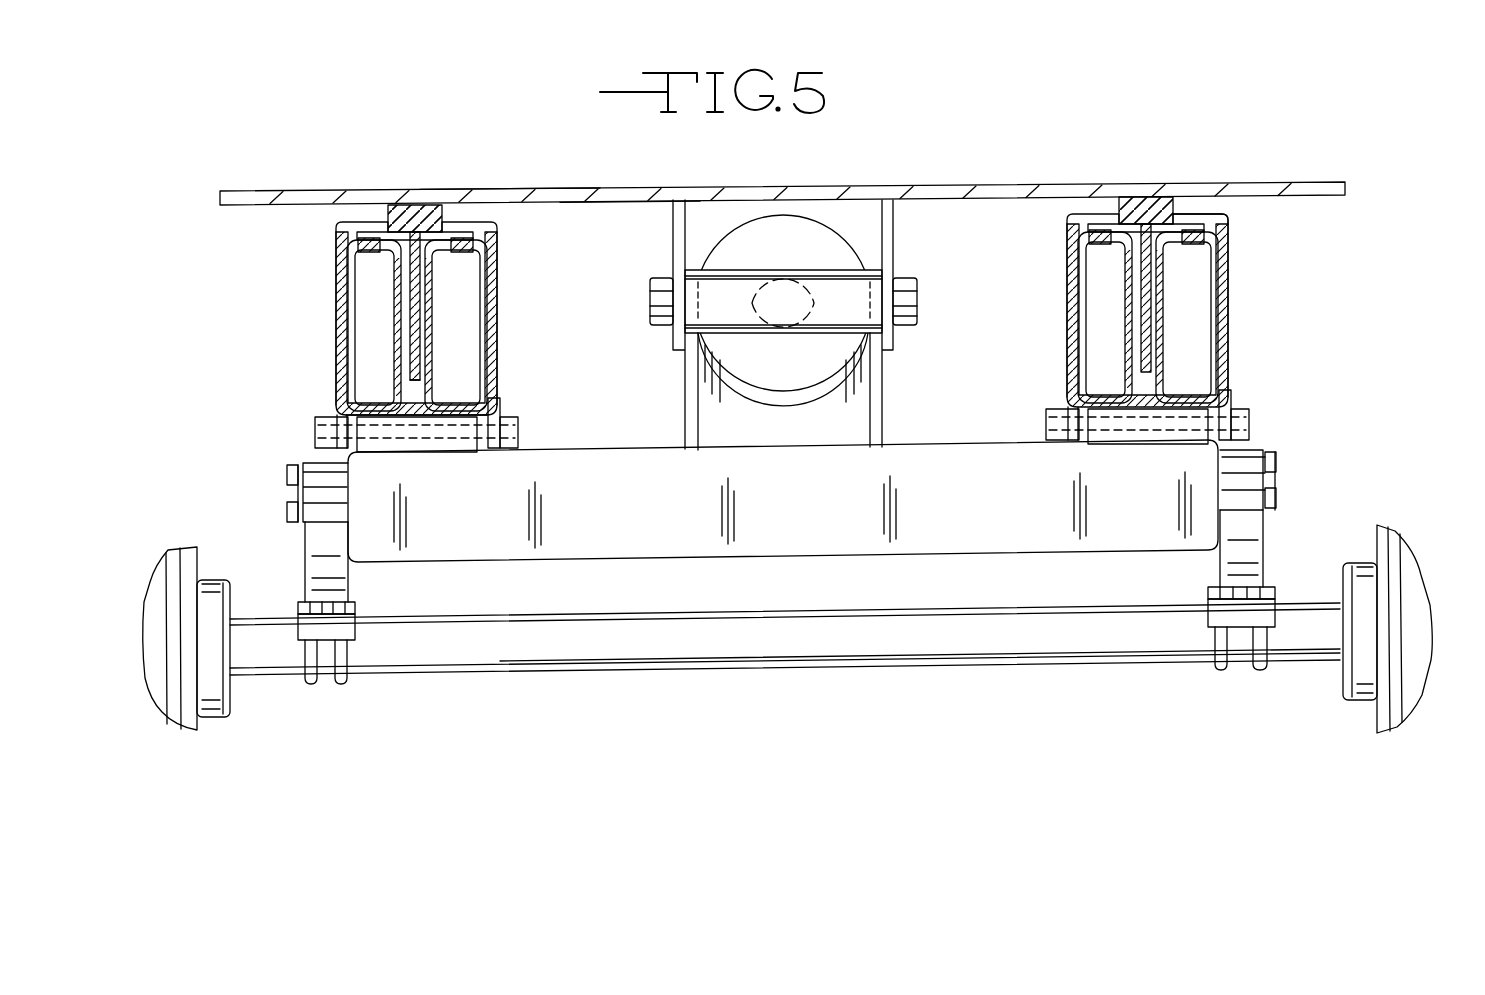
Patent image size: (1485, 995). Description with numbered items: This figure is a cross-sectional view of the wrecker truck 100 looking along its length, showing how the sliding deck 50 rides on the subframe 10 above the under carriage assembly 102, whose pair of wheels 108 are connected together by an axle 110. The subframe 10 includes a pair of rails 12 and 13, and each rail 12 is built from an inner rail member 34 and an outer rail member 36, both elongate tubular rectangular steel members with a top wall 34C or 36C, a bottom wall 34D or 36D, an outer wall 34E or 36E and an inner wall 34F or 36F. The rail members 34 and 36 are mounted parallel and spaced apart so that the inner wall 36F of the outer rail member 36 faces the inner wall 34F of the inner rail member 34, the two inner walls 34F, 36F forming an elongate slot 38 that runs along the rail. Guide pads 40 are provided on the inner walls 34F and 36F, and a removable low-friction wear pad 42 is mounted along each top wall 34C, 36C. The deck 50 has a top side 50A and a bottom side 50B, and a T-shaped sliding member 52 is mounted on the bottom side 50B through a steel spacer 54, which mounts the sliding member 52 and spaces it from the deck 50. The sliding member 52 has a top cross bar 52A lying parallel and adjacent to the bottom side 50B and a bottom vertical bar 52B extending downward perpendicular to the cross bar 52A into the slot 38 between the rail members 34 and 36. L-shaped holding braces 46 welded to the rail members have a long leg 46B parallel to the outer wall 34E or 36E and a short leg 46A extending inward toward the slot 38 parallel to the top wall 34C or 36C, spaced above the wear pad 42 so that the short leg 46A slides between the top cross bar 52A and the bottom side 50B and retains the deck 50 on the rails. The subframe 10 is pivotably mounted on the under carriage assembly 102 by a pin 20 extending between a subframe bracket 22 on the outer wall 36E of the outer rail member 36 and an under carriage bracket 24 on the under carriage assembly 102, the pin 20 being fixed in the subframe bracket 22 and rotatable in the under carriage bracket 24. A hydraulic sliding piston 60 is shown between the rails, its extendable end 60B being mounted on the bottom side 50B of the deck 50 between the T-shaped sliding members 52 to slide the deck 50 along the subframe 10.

The wrecker truck 100 is at (968, 98).
The sliding deck 50 is at (333, 190).
The top side of deck 50A is at (474, 177).
The bottom side of deck 50B is at (619, 210).
The spacer 54 is at (406, 205).
The T-shaped sliding member 52 is at (410, 350).
The top cross bar 52A is at (463, 235).
The bottom vertical bar 52B is at (428, 365).
The rail 12 is at (338, 387).
The outer rail member 36 is at (1223, 305).
The top wall of outer rail member 36C is at (368, 245).
The bottom wall of outer rail member 36D is at (340, 400).
The outer wall of outer rail member 36E is at (334, 321).
The inner wall of outer rail member 36F is at (395, 276).
The inner rail member 34 is at (1073, 310).
The top wall of inner rail member 34C is at (470, 245).
The bottom wall of inner rail member 34D is at (493, 387).
The outer wall of inner rail member 34E is at (500, 318).
The inner wall of inner rail member 34F is at (445, 277).
The L-shaped holding brace 46 is at (1073, 350).
The short leg of holding brace 46A is at (1095, 215).
The long leg of holding brace 46B is at (1070, 382).
The guide pad 40 is at (1130, 283).
The subframe 10 is at (1203, 287).
The rail 13 is at (1228, 235).
The wear pad 42 is at (1218, 235).
The slot 38 is at (1160, 230).
The subframe bracket 22 is at (1233, 393).
The pin 20 is at (1263, 418).
The under carriage bracket 24 is at (1212, 440).
The sliding piston 60 is at (808, 240).
The extendable end of piston 60B is at (810, 283).
The under carriage assembly 102 is at (1265, 540).
The wheel 108 is at (1398, 560).
The axle 110 is at (1305, 660).